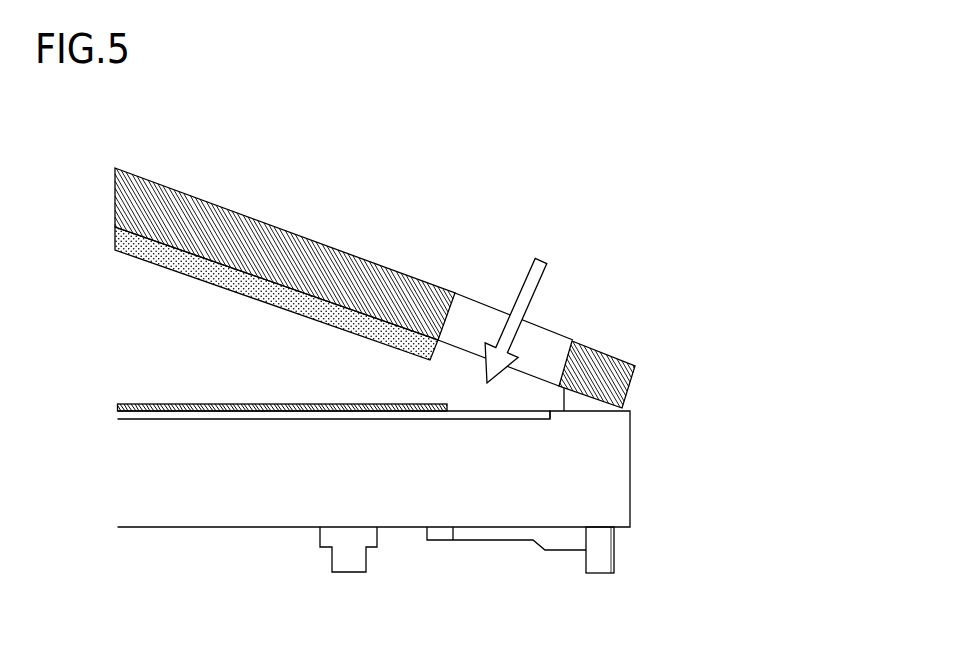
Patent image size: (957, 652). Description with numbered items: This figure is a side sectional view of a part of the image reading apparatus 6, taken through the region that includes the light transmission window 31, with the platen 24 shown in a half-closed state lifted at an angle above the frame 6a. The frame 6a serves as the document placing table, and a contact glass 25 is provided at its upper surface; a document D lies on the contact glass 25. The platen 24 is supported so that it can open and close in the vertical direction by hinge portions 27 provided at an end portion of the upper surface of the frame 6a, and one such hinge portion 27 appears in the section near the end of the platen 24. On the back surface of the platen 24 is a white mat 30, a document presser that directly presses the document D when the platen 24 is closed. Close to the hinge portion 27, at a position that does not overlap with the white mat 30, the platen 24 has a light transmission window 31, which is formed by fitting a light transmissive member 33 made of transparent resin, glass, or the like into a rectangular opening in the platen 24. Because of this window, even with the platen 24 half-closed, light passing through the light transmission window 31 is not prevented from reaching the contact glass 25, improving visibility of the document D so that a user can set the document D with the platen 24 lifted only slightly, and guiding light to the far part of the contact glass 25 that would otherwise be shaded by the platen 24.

The platen 24 is at (323, 245).
The white mat 30 is at (163, 262).
The light transmission window 31 is at (472, 296).
The light transmissive member 33 is at (541, 343).
The hinge portion 27 is at (631, 378).
The image reading apparatus 6 is at (673, 266).
The frame 6a is at (631, 485).
The contact glass 25 is at (114, 416).
The document D is at (215, 404).